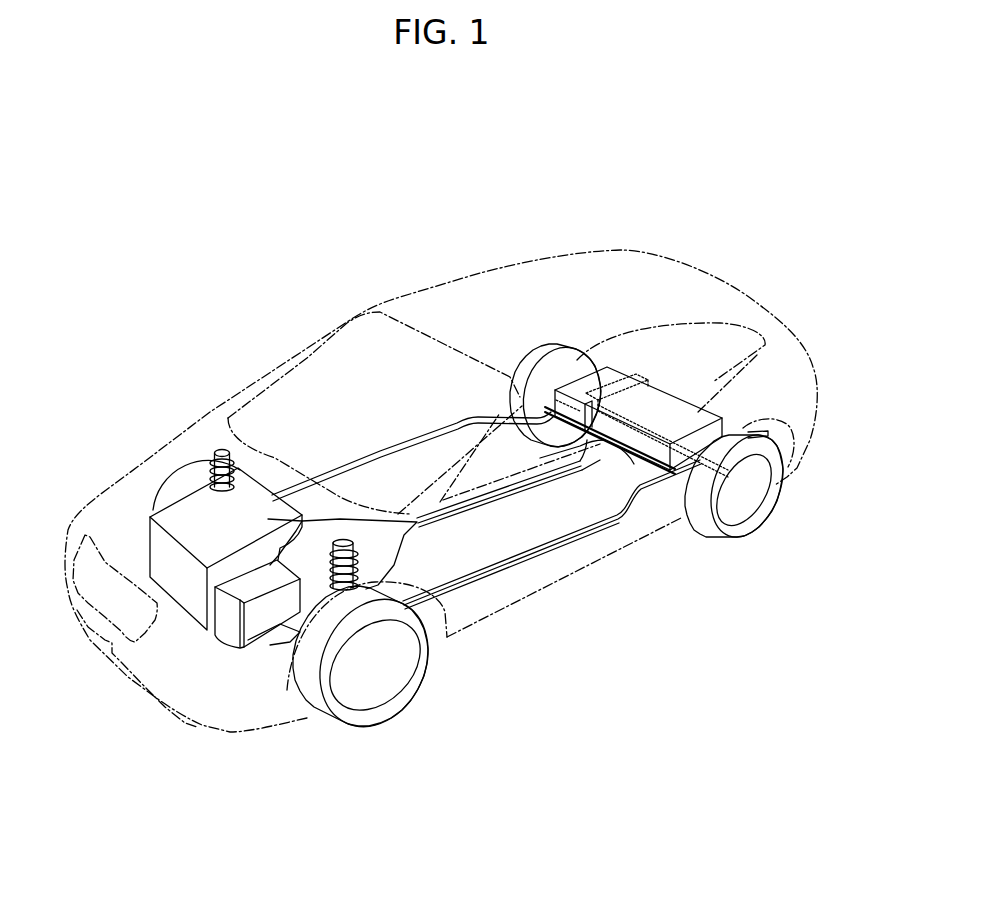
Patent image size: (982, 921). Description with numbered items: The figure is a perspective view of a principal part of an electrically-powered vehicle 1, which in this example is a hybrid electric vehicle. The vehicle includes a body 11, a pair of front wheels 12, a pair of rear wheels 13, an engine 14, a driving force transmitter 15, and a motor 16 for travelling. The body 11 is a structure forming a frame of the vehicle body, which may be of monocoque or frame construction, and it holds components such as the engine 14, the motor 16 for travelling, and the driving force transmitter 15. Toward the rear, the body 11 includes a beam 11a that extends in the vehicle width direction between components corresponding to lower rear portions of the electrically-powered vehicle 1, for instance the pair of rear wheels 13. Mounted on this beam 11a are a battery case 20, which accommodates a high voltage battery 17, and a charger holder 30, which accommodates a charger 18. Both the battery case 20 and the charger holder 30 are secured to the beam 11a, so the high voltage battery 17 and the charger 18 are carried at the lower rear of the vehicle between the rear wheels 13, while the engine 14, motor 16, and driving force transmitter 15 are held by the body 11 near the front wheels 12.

The electrically-powered vehicle 1 is at (459, 210).
The body 11 is at (300, 440).
The beam 11a is at (660, 467).
The front wheels 12 is at (185, 485).
The rear wheels 13 is at (549, 360).
The engine 14 is at (167, 557).
The driving force transmitter 15 is at (390, 547).
The motor for travelling 16 is at (233, 633).
The high voltage battery 17 is at (689, 344).
The charger 18 is at (598, 382).
The battery case 20 is at (700, 416).
The charger holder 30 is at (612, 377).